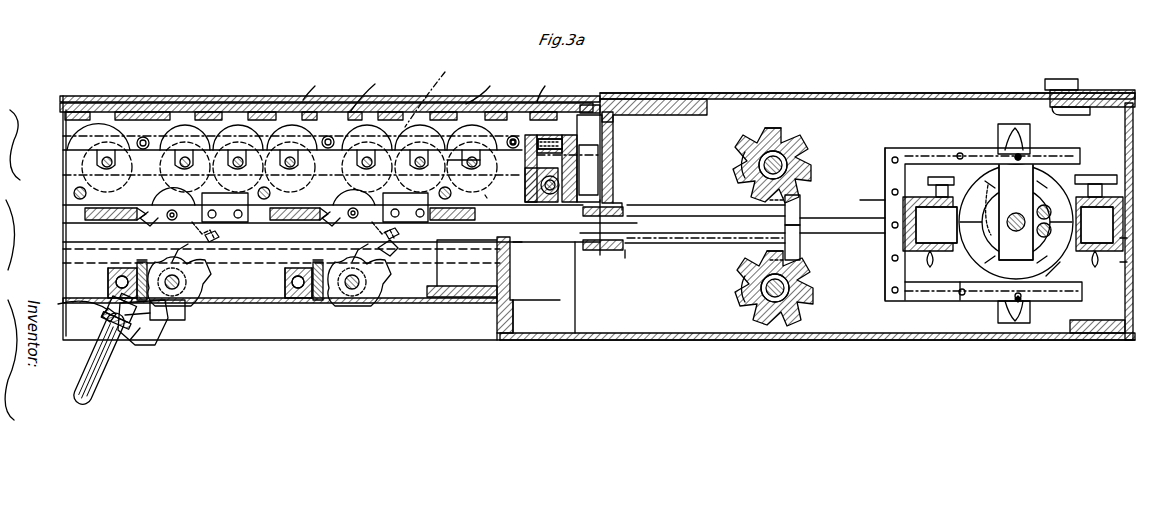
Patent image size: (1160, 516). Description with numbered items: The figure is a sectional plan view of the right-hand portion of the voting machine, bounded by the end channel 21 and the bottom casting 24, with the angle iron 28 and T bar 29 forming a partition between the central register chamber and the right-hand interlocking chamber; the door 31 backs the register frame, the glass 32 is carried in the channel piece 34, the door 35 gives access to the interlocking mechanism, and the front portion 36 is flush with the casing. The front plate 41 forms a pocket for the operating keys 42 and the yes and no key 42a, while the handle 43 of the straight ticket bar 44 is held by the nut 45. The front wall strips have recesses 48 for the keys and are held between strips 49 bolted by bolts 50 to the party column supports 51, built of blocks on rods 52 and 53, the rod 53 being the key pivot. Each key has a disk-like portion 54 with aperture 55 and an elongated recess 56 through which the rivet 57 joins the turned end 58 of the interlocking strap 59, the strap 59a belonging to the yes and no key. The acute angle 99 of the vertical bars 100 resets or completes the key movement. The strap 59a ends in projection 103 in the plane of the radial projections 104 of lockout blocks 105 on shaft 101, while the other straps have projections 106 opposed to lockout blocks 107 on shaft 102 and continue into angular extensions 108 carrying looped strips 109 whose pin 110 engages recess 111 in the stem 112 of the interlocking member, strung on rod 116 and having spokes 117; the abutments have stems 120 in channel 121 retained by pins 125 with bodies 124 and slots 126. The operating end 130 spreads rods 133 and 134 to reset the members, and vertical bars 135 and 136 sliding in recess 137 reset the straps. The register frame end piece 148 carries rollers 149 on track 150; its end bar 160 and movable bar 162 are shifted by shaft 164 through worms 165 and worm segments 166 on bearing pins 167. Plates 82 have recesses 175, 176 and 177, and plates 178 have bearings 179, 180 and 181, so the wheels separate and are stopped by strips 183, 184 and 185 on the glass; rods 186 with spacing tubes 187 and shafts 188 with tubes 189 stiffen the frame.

The channel 21 is at (1131, 196).
The channel-shaped casting 24 is at (582, 316).
The angle iron 28 is at (702, 94).
The T bar 29 is at (503, 342).
The door 31 is at (298, 112).
The glass covering 32 is at (320, 85).
The channel piece 34 is at (600, 96).
The door 35 is at (867, 92).
The front portion of casing 36 is at (785, 342).
The front plate 41 is at (224, 308).
The operating key 42 is at (151, 334).
The yes and no key 42a is at (380, 345).
The handle 43 is at (89, 410).
The straight ticket angle iron bar 44 is at (69, 303).
The nut 45 is at (108, 308).
The recess 48 is at (178, 305).
The strip 49 is at (320, 305).
The bolt 50 is at (316, 266).
The party column support 51 is at (262, 308).
The rod 52 is at (295, 304).
The rod 53 is at (364, 304).
The central disk-like portion 54 is at (374, 286).
The aperture 55 is at (391, 252).
The elongated recess 56 is at (455, 248).
The rivet 57 is at (398, 222).
The backwardly turned end 58 is at (257, 215).
The interlocking strap 59 is at (865, 218).
The interlocking strap 59a is at (576, 244).
The plate 82 is at (495, 188).
The acute angle 99 is at (295, 282).
The vertical bar 100 is at (208, 252).
The lockout shaft 101 is at (805, 165).
The lockout shaft 102 is at (808, 288).
The projection 103 is at (802, 198).
The radial projection 104 is at (750, 288).
The lockout block 105 is at (744, 166).
The projection 106 is at (802, 250).
The lockout block 107 is at (796, 312).
The angular extension 108 is at (882, 178).
The thin metallic strip 109 is at (872, 340).
The pin 110 is at (1022, 296).
The recess 111 is at (1041, 342).
The stem 112 is at (1088, 338).
The supporting rod 116 is at (976, 320).
The spoke 117 is at (1016, 222).
The stem 120 is at (930, 232).
The channel 121 is at (916, 320).
The body 124 is at (1126, 240).
The retaining pin 125 is at (945, 178).
The slot 126 is at (1126, 266).
The operating end 130 is at (1099, 232).
The rod 133 is at (1060, 268).
The rod 134 is at (1065, 185).
The vertical bar 135 is at (624, 250).
The vertical bar 136 is at (640, 204).
The longitudinal recess 137 is at (673, 236).
The end piece 148 is at (614, 152).
The friction roller 149 is at (613, 172).
The track 150 is at (614, 126).
The vertical end bar 160 is at (527, 213).
The bar 162 is at (534, 138).
The vertical shaft 164 is at (550, 250).
The worm 165 is at (590, 218).
The worm segment 166 is at (480, 162).
The bearing pin 167 is at (563, 126).
The straight recess 175 is at (185, 157).
The slightly inclined recess 176 is at (238, 157).
The still more inclined recess 177 is at (378, 90).
The plate 178 is at (442, 142).
The plain circular bearing 179 is at (434, 90).
The slightly elongated bearing 180 is at (485, 86).
The still more elongated bearing 181 is at (541, 85).
The vertical bar or plate 183 is at (212, 118).
The vertical bar or plate 184 is at (288, 157).
The vertical bar or plate 185 is at (295, 162).
The rod 186 is at (268, 193).
The spacing tube 187 is at (73, 194).
The shaft 188 is at (146, 138).
The tube 189 is at (141, 138).